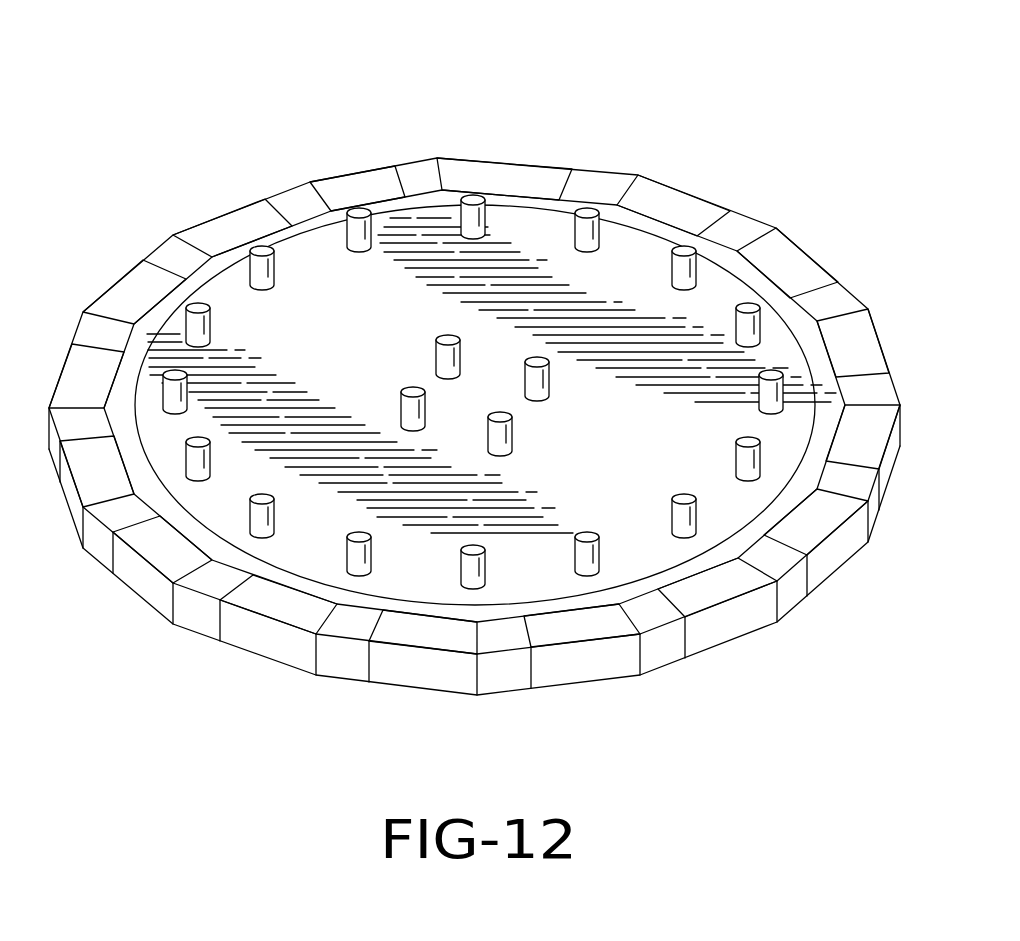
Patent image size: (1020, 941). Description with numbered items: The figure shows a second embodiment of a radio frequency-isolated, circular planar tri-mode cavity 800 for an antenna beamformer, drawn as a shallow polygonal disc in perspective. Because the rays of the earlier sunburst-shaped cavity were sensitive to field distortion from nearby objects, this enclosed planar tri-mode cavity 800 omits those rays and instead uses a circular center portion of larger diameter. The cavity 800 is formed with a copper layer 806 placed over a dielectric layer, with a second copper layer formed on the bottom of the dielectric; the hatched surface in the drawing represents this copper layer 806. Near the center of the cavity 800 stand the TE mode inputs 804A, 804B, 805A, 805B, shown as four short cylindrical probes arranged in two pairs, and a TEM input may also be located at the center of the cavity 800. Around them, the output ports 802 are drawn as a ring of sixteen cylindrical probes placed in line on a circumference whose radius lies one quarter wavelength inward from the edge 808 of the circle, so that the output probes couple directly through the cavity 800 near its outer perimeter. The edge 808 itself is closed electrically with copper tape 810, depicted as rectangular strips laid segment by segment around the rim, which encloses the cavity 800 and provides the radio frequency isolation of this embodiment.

The enclosed planar tri-mode cavity 800 is at (697, 110).
The output ports 802 is at (473, 196).
The TE mode input 804A is at (450, 338).
The TE mode input 804B is at (500, 449).
The TE mode input 805A is at (412, 390).
The TE mode input 805B is at (537, 394).
The copper layer 806 is at (638, 280).
The edge of the circle 808 is at (736, 636).
The copper tape 810 is at (232, 222).